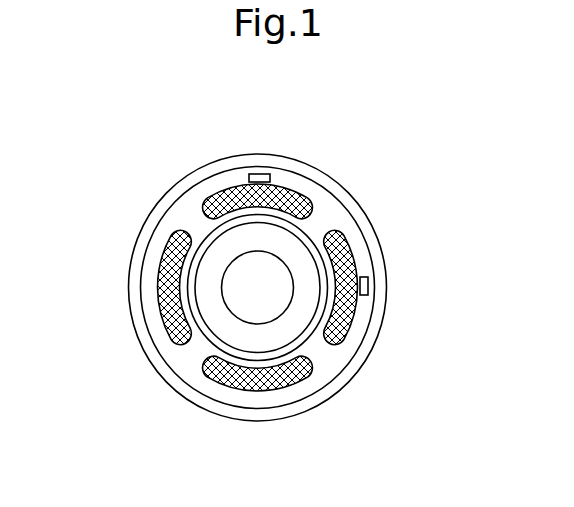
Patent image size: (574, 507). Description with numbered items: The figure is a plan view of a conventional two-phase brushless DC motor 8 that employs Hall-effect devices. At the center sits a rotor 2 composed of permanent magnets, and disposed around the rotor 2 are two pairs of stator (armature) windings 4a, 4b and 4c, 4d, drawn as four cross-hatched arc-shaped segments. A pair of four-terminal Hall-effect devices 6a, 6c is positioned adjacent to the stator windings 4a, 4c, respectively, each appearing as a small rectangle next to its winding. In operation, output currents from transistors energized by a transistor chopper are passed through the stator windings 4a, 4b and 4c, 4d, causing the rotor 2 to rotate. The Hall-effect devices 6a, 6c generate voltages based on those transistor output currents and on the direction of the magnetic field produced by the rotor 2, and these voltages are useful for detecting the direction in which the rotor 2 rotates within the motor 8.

The rotor 2 is at (301, 239).
The stator winding 4a is at (300, 194).
The stator winding 4b is at (305, 376).
The stator winding 4c is at (350, 297).
The stator winding 4d is at (163, 318).
The Hall-effect device 6a is at (259, 174).
The Hall-effect device 6c is at (368, 277).
The DC motor 8 is at (368, 362).